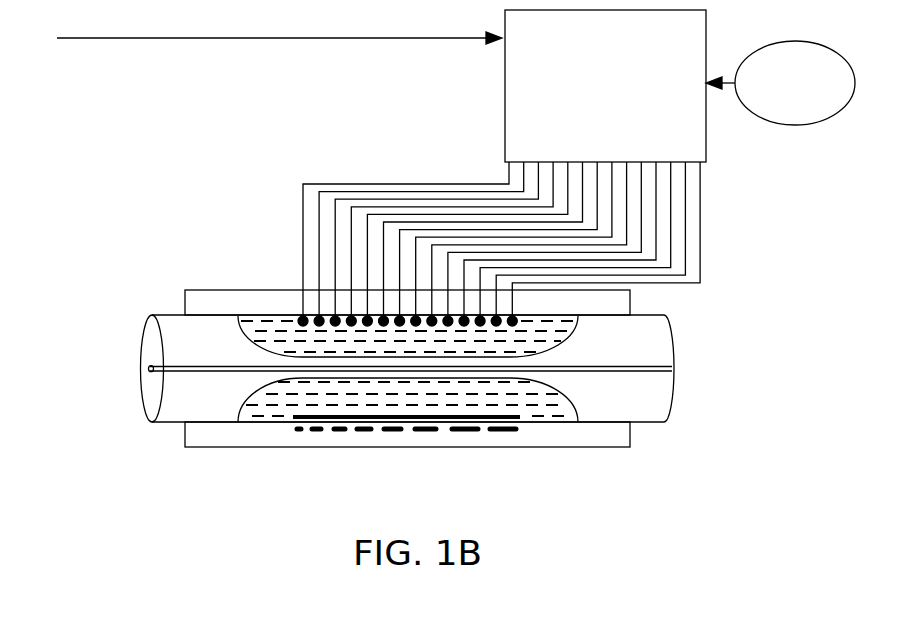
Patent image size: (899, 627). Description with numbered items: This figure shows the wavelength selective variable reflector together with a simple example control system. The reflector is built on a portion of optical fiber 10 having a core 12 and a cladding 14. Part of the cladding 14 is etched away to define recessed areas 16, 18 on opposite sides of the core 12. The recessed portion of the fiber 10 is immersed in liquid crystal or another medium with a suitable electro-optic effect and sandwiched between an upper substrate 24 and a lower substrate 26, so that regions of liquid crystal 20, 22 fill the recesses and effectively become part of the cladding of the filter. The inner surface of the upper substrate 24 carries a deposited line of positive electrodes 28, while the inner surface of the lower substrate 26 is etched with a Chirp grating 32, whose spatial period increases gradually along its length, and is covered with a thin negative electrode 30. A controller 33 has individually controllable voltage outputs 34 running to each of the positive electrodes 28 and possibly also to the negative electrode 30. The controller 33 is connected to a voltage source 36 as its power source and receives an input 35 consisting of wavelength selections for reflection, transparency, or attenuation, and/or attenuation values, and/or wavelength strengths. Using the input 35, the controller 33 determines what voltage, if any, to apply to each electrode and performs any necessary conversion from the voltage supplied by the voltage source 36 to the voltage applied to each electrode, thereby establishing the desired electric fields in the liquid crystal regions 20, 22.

The optical fiber 10 is at (106, 296).
The core 12 is at (192, 369).
The cladding 14 is at (167, 384).
The recessed area 16 is at (545, 345).
The recessed area 18 is at (550, 392).
The region of liquid crystal 20 is at (538, 320).
The region of liquid crystal 22 is at (543, 410).
The upper substrate 24 is at (630, 292).
The lower substrate 26 is at (630, 435).
The positive electrodes 28 is at (523, 303).
The negative electrode 30 is at (328, 421).
The Chirp grating 32 is at (520, 440).
The controller 33 is at (617, 115).
The voltage outputs 34 is at (706, 175).
The input 35 is at (261, 51).
The voltage source 36 is at (814, 125).